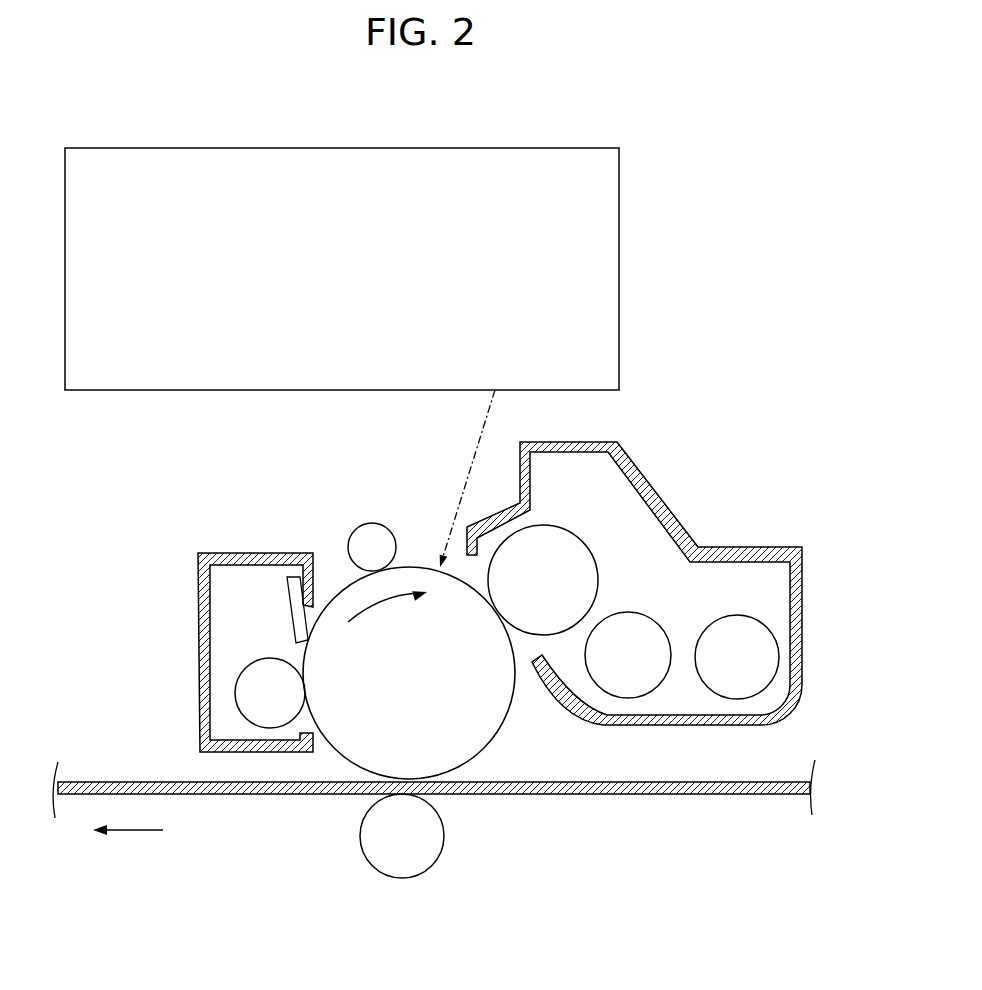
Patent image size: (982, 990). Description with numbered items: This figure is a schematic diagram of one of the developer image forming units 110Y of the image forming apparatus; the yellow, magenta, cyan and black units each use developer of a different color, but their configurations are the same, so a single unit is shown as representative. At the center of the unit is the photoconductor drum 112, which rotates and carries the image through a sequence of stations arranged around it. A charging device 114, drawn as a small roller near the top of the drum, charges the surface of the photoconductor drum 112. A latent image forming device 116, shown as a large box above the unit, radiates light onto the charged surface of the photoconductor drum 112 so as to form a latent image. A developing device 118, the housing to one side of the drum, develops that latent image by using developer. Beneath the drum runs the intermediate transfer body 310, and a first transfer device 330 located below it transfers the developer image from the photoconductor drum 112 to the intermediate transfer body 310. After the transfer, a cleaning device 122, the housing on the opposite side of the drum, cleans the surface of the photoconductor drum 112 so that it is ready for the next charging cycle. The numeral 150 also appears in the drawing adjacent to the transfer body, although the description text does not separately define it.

The developer image forming unit 110Y is at (792, 282).
The photoconductor drum 112 is at (494, 741).
The charging device 114 is at (364, 523).
The latent image forming device 116 is at (82, 391).
The developing device 118 is at (733, 547).
The cleaning device 122 is at (198, 650).
The intermediate transfer belt 150 is at (565, 795).
The intermediate transfer body 310 is at (434, 788).
The first transfer device 330 is at (400, 877).